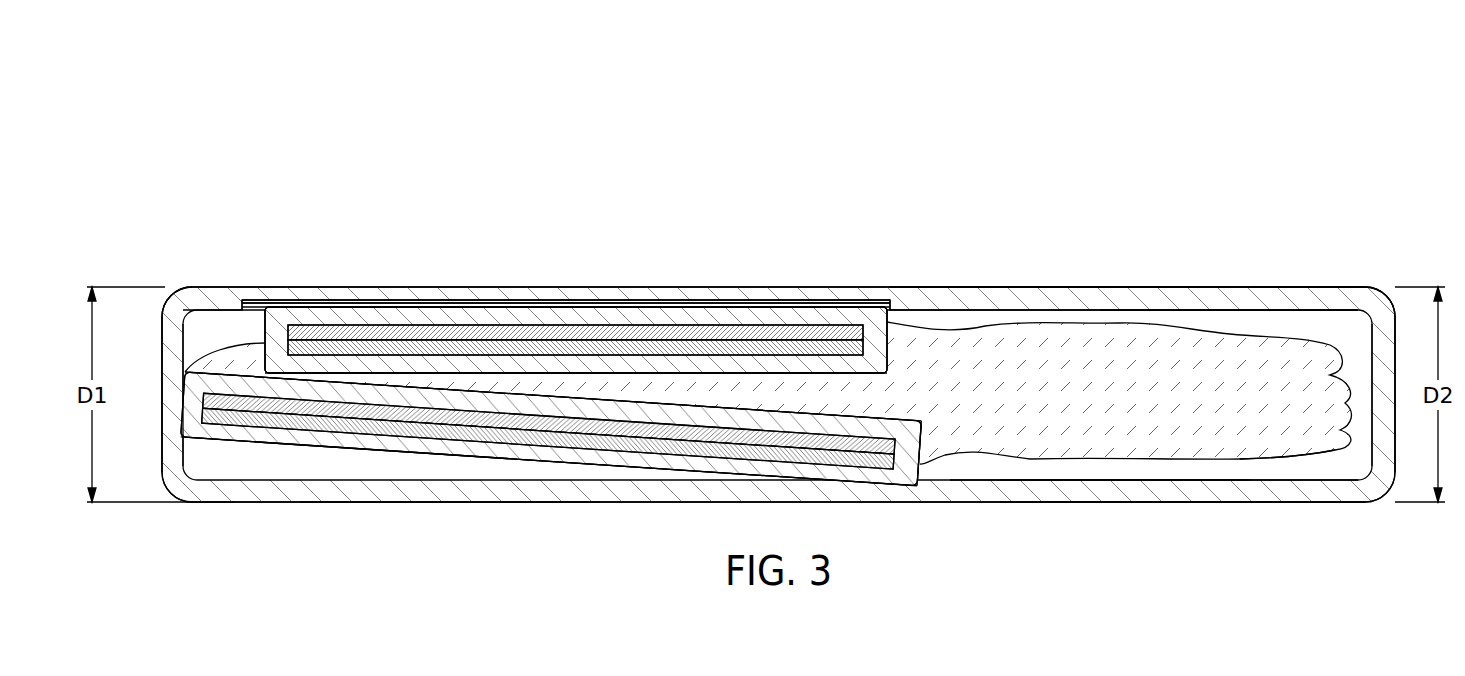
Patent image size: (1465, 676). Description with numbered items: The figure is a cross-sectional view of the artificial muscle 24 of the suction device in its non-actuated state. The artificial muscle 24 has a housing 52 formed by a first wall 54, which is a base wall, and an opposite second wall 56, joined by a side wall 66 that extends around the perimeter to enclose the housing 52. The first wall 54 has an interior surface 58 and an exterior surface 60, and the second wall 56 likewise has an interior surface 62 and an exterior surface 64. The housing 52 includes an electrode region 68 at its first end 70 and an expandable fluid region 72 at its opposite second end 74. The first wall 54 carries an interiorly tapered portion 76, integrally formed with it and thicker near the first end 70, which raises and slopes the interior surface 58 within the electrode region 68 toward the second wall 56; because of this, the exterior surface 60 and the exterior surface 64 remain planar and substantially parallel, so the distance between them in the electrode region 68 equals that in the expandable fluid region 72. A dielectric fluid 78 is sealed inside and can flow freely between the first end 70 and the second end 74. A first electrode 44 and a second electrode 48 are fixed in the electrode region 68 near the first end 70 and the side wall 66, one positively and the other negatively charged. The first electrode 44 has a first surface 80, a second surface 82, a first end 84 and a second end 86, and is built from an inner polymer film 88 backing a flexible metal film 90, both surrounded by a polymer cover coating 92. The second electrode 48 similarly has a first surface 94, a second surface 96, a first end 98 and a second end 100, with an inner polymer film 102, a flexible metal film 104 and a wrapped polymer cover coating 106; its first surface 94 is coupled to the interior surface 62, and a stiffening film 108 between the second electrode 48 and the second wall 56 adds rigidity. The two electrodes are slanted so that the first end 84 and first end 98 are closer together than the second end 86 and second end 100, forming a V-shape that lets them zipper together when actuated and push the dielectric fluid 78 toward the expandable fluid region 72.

The artificial muscle 24 is at (935, 122).
The first electrode 44 is at (226, 475).
The second electrode 48 is at (240, 318).
The housing 52 is at (1104, 294).
The first wall 54 is at (1229, 500).
The second wall 56 is at (1060, 287).
The interior surface 58 is at (1062, 475).
The exterior surface 60 is at (1163, 502).
The interior surface 62 is at (1206, 310).
The exterior surface 64 is at (1300, 287).
The side wall 66 is at (1395, 463).
The electrode region 68 is at (399, 254).
The first end 70 is at (162, 312).
The expandable fluid region 72 is at (1270, 225).
The second end 74 is at (1395, 310).
The interiorly tapered portion 76 is at (418, 498).
The dielectric fluid 78 is at (1289, 450).
The first surface 80 is at (628, 470).
The second surface 82 is at (735, 408).
The first end 84 is at (178, 422).
The second end 86 is at (938, 475).
The inner polymer film 88 is at (540, 438).
The flexible metal film 90 is at (373, 410).
The polymer cover coating 92 is at (818, 480).
The first surface 94 is at (767, 307).
The second surface 96 is at (678, 373).
The first end 98 is at (260, 316).
The second end 100 is at (890, 318).
The inner polymer film 102 is at (551, 336).
The flexible metal film 104 is at (479, 347).
The polymer cover coating 106 is at (352, 313).
The stiffening film 108 is at (441, 304).